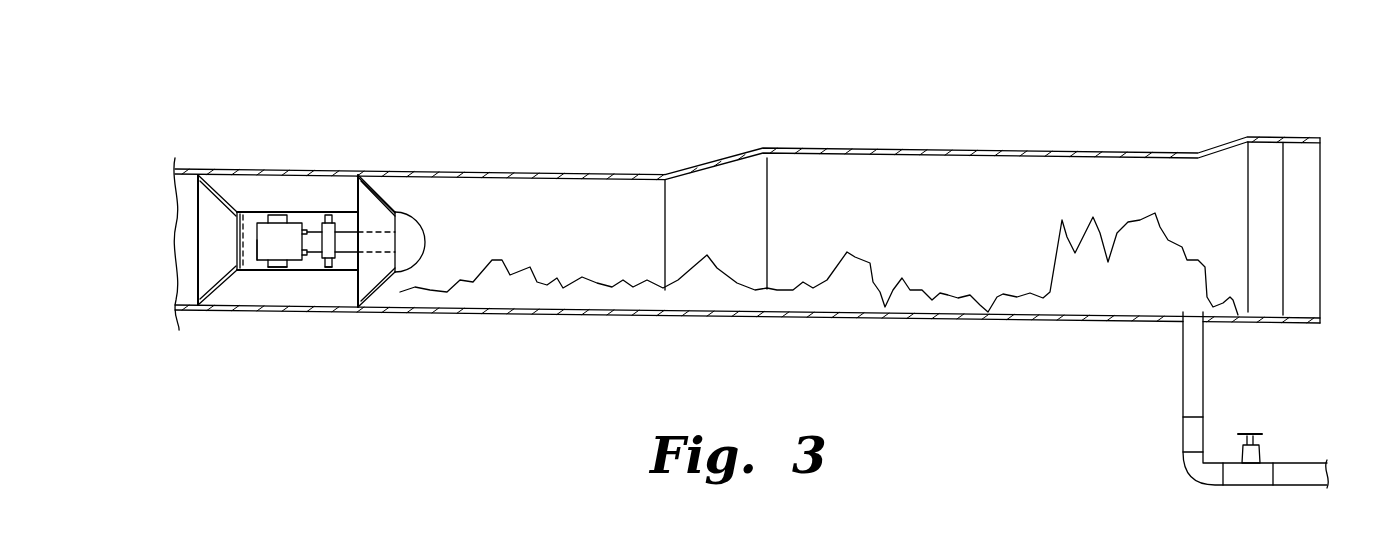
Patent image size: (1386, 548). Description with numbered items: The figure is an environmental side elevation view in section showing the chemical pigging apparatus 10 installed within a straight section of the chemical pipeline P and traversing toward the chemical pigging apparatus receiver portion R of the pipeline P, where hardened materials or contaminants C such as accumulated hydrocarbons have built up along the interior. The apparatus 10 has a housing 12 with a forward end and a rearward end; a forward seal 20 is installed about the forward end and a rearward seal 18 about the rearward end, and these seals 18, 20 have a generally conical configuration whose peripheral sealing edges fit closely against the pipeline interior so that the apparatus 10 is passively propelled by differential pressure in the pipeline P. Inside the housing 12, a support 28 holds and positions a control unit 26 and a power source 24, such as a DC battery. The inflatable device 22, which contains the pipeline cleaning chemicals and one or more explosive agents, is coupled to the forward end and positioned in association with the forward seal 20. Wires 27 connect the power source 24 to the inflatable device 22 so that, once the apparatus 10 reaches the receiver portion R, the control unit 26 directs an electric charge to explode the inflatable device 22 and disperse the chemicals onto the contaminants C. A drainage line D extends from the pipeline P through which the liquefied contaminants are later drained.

The chemical pigging apparatus 10 is at (289, 172).
The housing 12 is at (313, 212).
The rearward seal 18 is at (204, 172).
The forward seal 20 is at (362, 174).
The inflatable device 22 is at (403, 212).
The power source 24 is at (258, 250).
The control unit 26 is at (336, 243).
The wires 27 is at (387, 208).
The support 28 is at (316, 268).
The hardened materials or contaminants C is at (495, 257).
The chemical pipeline P is at (921, 90).
The chemical pigging apparatus receiver portion R is at (966, 186).
The drainage line D is at (1145, 398).